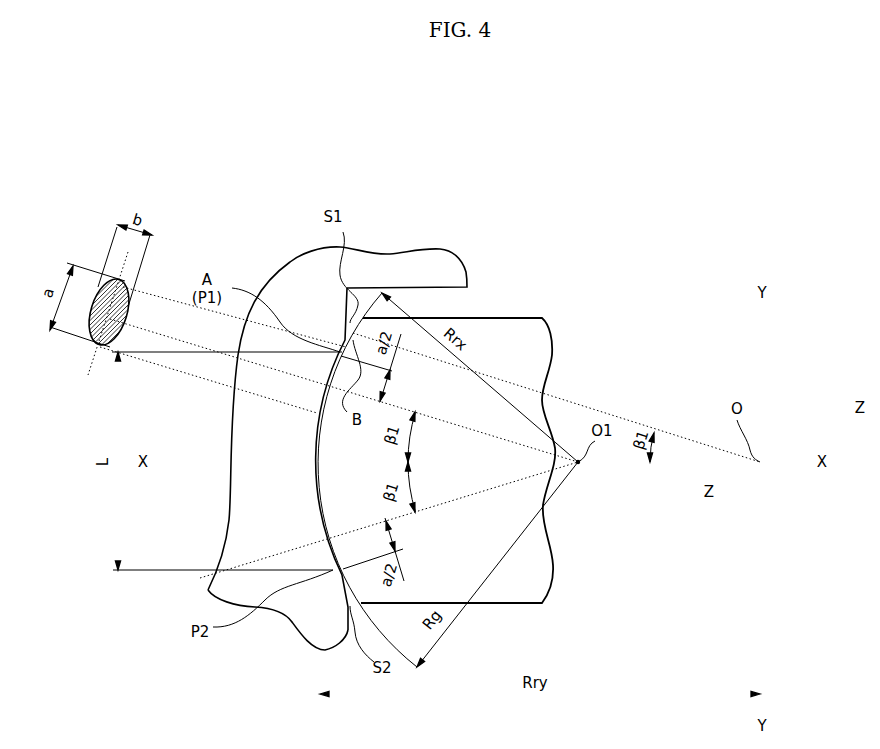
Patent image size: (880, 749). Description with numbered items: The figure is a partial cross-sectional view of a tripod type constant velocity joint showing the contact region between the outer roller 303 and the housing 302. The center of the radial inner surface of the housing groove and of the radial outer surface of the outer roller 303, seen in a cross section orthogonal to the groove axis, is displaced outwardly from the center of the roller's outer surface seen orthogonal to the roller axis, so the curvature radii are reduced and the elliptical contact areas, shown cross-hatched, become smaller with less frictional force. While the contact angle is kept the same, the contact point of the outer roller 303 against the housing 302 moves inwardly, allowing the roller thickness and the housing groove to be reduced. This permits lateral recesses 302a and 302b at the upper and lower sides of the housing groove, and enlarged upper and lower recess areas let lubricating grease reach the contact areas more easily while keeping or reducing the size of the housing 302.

The housing 302 is at (447, 264).
The lateral recess 302a is at (347, 322).
The lateral recess 302b is at (347, 620).
The outer roller 303 is at (538, 336).